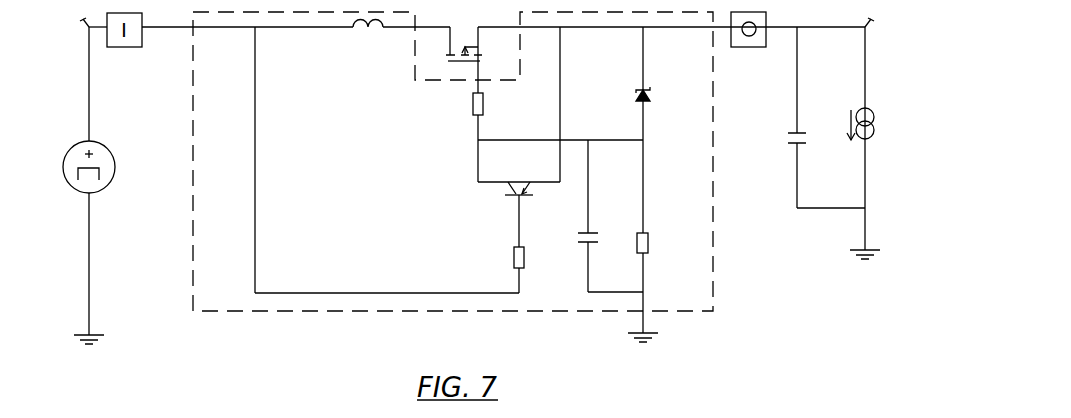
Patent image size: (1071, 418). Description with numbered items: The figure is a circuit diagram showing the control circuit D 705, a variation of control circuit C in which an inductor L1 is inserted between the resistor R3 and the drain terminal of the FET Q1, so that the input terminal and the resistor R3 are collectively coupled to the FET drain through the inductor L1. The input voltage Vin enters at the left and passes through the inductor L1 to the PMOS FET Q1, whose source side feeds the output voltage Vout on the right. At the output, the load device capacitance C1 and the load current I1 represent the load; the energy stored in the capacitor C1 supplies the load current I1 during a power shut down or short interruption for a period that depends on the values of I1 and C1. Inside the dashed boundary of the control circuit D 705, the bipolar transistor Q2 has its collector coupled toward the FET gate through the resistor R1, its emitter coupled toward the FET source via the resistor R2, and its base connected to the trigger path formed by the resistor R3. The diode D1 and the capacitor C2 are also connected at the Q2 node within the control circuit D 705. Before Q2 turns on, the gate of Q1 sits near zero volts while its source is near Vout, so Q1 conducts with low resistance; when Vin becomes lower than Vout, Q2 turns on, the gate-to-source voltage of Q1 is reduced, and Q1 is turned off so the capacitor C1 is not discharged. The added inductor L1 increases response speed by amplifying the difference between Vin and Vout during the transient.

The control circuit D 705 is at (401, 258).
The inductor L1 is at (368, 42).
The FET Q1 is at (477, 60).
The resistor R1 is at (465, 100).
The bipolar transistor Q2 is at (518, 204).
The resistor R3 is at (535, 252).
The capacitor C2 is at (601, 216).
The diode D1 is at (631, 130).
The resistor R2 is at (660, 239).
The load device capacitance C1 is at (812, 117).
The load current I1 is at (868, 138).
The input voltage Vin is at (67, 25).
The output voltage Vout is at (892, 25).